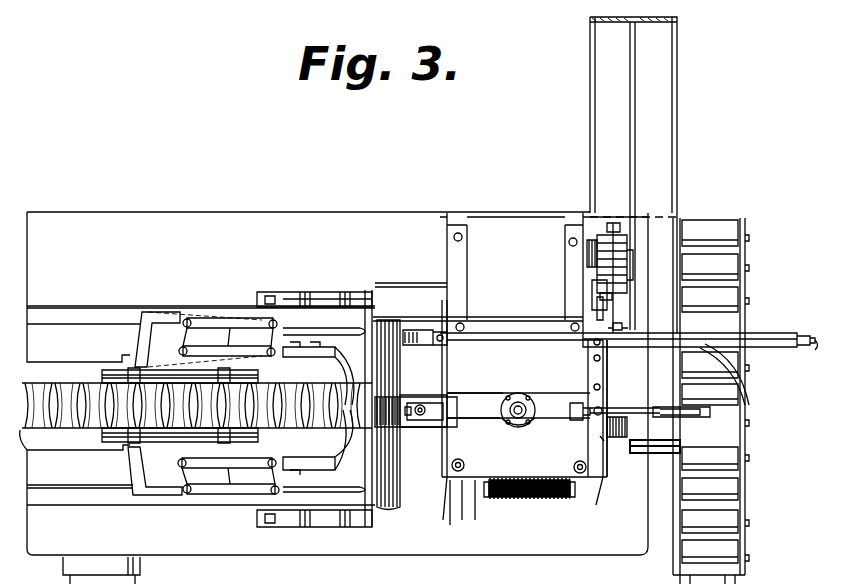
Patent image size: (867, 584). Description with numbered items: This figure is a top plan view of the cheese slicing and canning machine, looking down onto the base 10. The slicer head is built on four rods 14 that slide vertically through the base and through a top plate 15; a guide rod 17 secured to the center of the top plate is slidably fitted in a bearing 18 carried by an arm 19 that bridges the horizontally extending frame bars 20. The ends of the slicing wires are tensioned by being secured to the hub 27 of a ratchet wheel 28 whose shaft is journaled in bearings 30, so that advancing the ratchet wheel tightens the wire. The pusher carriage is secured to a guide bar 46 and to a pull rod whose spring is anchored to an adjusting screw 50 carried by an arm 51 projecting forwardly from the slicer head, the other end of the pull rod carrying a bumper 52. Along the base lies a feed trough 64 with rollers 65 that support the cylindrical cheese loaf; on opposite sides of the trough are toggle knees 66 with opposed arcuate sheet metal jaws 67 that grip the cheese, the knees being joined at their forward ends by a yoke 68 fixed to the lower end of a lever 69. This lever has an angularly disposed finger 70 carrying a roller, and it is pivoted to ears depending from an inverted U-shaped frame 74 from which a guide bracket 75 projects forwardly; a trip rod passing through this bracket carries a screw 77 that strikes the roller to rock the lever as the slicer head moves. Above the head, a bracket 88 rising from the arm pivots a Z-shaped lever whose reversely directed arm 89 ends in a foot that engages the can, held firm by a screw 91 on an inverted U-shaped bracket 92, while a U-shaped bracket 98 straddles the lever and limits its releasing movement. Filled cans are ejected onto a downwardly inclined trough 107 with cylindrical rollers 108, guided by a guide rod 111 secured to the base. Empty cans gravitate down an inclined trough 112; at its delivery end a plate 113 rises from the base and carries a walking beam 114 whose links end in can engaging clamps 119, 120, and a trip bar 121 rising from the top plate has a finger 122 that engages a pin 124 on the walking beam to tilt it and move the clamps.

The base 10 is at (286, 211).
The rods 14 is at (455, 482).
The top plate 15 is at (462, 532).
The guide rod 17 is at (518, 400).
The bearing 18 is at (513, 423).
The arm 19 is at (487, 413).
The frame bars 20 is at (455, 365).
The hub 27 is at (563, 498).
The ratchet wheel 28 is at (530, 498).
The bearings 30 is at (486, 498).
The guide bar 46 is at (700, 445).
The adjusting screw 50 is at (803, 359).
The arm 51 is at (765, 340).
The bumper 52 is at (430, 328).
The feed trough 64 is at (84, 440).
The rollers 65 is at (70, 380).
The toggle knees 66 is at (237, 312).
The arcuate sheet metal jaws 67 is at (160, 367).
The yoke 68 is at (340, 460).
The lever 69 is at (350, 405).
The finger 70 is at (413, 400).
The inverted U-shaped frame 74 is at (392, 495).
The guide bracket 75 is at (457, 393).
The screw 77 is at (417, 427).
The bracket 88 is at (577, 420).
The reversely directed arm 89 is at (712, 412).
The screw 91 is at (606, 410).
The inverted U-shaped bracket 92 is at (603, 440).
The U-shaped bracket 98 is at (625, 429).
The downwardly inclined trough 107 is at (648, 572).
The cylindrical rollers 108 is at (745, 462).
The guide rod 111 is at (742, 388).
The inclined trough 112 is at (679, 128).
The plate 113 is at (595, 256).
The walking beam 114 is at (620, 255).
The can engaging clamp 119 is at (625, 324).
The can engaging clamp 120 is at (650, 276).
The trip bar 121 is at (600, 320).
The finger 122 is at (608, 300).
The pin 124 is at (600, 297).